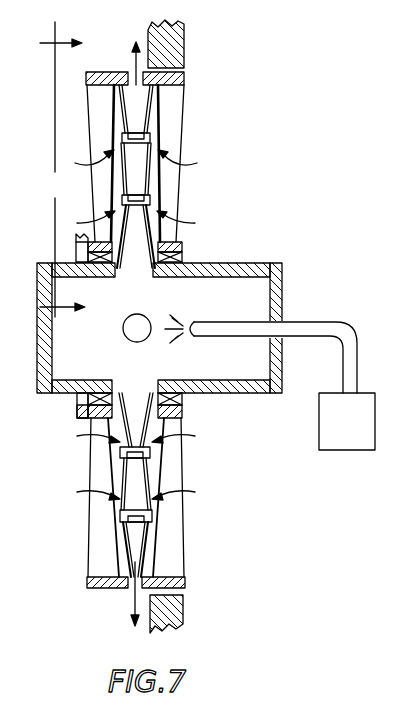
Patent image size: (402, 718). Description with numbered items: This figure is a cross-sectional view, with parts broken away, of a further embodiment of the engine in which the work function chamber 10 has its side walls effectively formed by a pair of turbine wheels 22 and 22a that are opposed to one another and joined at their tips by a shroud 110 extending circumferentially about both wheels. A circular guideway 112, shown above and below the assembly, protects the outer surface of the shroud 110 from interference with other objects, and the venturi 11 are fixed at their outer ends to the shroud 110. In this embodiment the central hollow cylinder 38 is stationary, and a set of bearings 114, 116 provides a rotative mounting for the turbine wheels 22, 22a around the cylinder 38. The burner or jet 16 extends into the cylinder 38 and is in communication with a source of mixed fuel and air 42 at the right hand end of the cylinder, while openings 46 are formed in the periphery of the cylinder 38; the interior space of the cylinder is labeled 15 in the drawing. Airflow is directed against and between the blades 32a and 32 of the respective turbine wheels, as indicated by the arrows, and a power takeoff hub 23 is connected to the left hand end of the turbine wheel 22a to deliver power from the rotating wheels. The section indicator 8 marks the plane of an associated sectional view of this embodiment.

The section line 8- 8 is at (45, 176).
The work function chamber 10 is at (160, 233).
The venturi 11 is at (112, 551).
The chamber 15 is at (247, 305).
The burner or jet 16 is at (300, 320).
The turbine wheel 22 is at (185, 137).
The turbine wheel 22a is at (86, 120).
The power takeoff hub 23 is at (80, 419).
The blades 32 is at (178, 188).
The blades 32a is at (93, 186).
The central hollow cylinder 38 is at (252, 262).
The source of mixed fuel and air 42 is at (356, 434).
The openings 46 is at (123, 330).
The shroud 110 is at (184, 80).
The circular guideway 112 is at (184, 50).
The bearings 114 is at (77, 400).
The bearings 116 is at (183, 400).